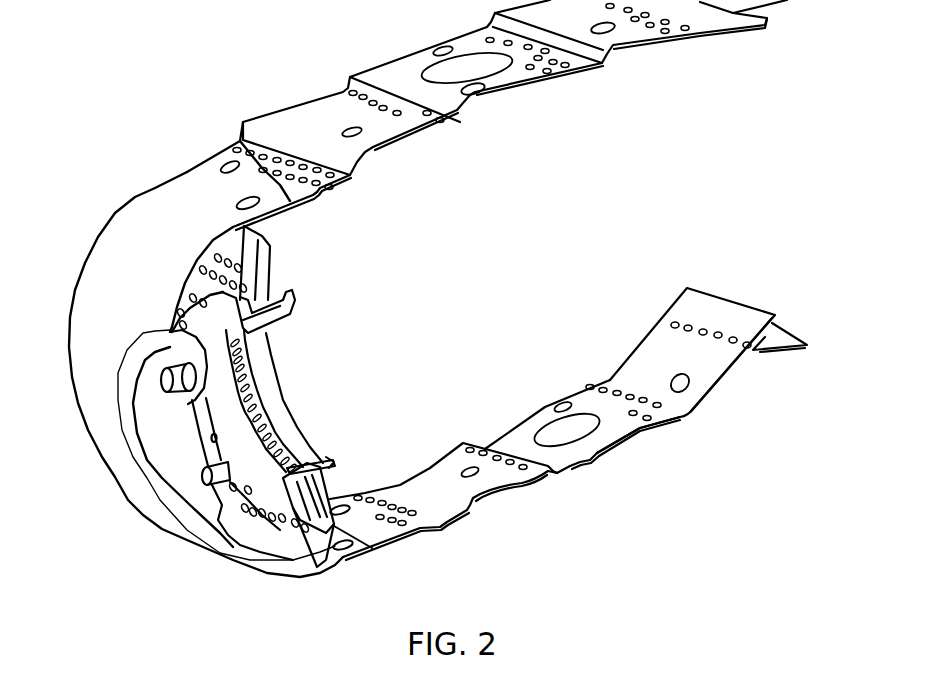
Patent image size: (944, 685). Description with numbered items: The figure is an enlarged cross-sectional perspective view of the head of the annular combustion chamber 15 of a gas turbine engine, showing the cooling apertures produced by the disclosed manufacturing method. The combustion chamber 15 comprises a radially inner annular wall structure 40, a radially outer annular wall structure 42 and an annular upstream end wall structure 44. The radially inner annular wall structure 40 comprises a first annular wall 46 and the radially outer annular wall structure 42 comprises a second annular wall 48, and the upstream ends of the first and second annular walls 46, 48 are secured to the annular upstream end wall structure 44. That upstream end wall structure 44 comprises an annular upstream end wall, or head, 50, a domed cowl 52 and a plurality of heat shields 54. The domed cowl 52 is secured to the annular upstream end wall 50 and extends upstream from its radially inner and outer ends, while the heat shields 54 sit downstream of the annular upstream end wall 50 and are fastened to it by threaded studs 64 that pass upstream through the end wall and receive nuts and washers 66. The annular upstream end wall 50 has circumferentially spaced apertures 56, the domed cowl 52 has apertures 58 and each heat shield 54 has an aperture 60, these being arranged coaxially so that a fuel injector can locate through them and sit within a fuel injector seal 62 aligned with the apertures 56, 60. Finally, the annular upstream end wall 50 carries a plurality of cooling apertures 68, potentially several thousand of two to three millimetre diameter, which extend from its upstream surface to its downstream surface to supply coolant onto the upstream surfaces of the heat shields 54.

The combustion chamber 15 is at (655, 490).
The radially inner annular wall structure 40 is at (720, 387).
The radially outer annular wall structure 42 is at (673, 47).
The annular upstream end wall structure 44 is at (127, 506).
The first annular wall 46 is at (643, 427).
The second annular wall 48 is at (627, 47).
The annular upstream end wall 50 is at (300, 543).
The domed cowl 52 is at (235, 557).
The heat shield 54 is at (327, 497).
The aperture 56 is at (282, 313).
The aperture 58 is at (158, 437).
The aperture 60 is at (313, 457).
The fuel injector seal 62 is at (275, 397).
The threaded stud 64 is at (203, 488).
The nuts and washers 66 is at (226, 484).
The cooling aperture 68 is at (283, 518).